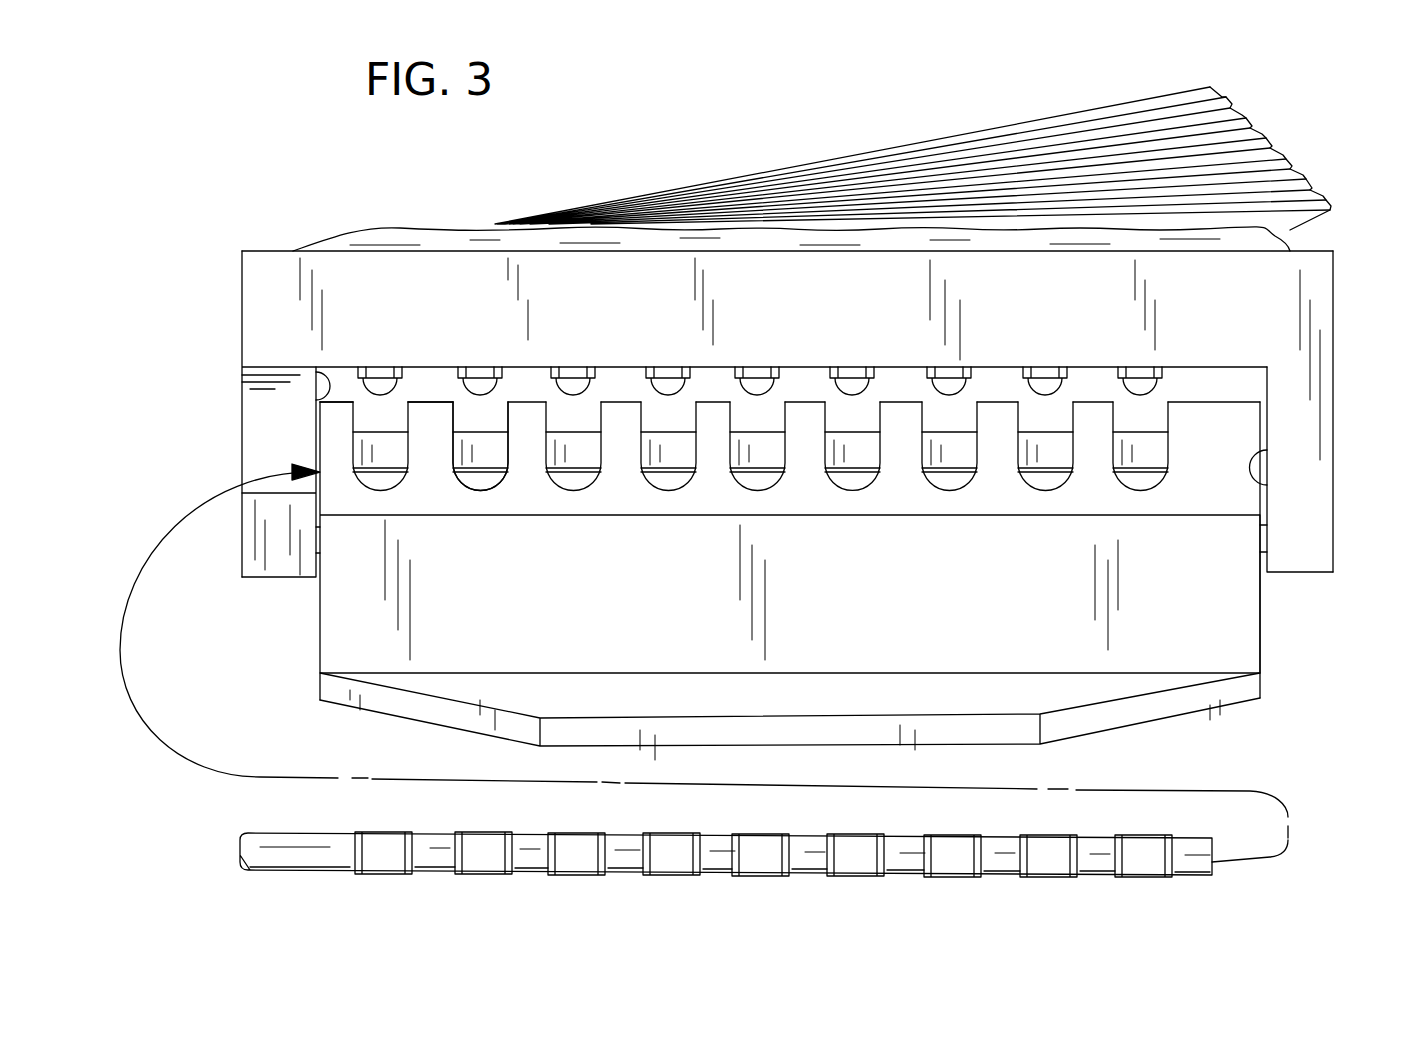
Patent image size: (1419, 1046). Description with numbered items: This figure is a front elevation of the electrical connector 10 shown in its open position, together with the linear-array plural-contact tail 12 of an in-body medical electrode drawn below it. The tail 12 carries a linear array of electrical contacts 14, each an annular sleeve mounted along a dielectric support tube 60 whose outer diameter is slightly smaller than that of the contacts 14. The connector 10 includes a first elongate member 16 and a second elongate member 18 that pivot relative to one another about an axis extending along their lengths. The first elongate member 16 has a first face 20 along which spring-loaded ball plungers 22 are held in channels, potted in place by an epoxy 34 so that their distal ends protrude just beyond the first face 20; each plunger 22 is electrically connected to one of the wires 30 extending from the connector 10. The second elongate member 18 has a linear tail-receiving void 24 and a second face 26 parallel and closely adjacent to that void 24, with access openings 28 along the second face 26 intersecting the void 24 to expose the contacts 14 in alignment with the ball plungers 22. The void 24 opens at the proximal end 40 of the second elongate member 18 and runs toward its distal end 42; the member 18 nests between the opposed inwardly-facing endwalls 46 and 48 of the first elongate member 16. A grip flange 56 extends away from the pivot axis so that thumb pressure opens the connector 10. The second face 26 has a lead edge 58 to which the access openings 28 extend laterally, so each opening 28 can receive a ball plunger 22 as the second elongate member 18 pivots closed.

The electrical connector 10 is at (258, 224).
The linear-array plural-contact tail 12 is at (283, 833).
The electrical contacts 14 is at (578, 867).
The first elongate member 16 is at (1290, 274).
The second elongate member 18 is at (1197, 626).
The first face 20 is at (1227, 368).
The spring-loaded ball plungers 22 is at (571, 372).
The linear tail-receiving void 24 is at (475, 475).
The second face 26 is at (333, 452).
The access openings 28 is at (467, 417).
The wires 30 is at (727, 187).
The epoxy 34 is at (357, 230).
The proximal end 40 is at (322, 615).
The distal end 42 is at (1262, 610).
The endwall 46 is at (320, 408).
The endwall 48 is at (1262, 487).
The grip flange 56 is at (1013, 733).
The lead edge 58 is at (352, 400).
The dielectric support tube 60 is at (722, 867).